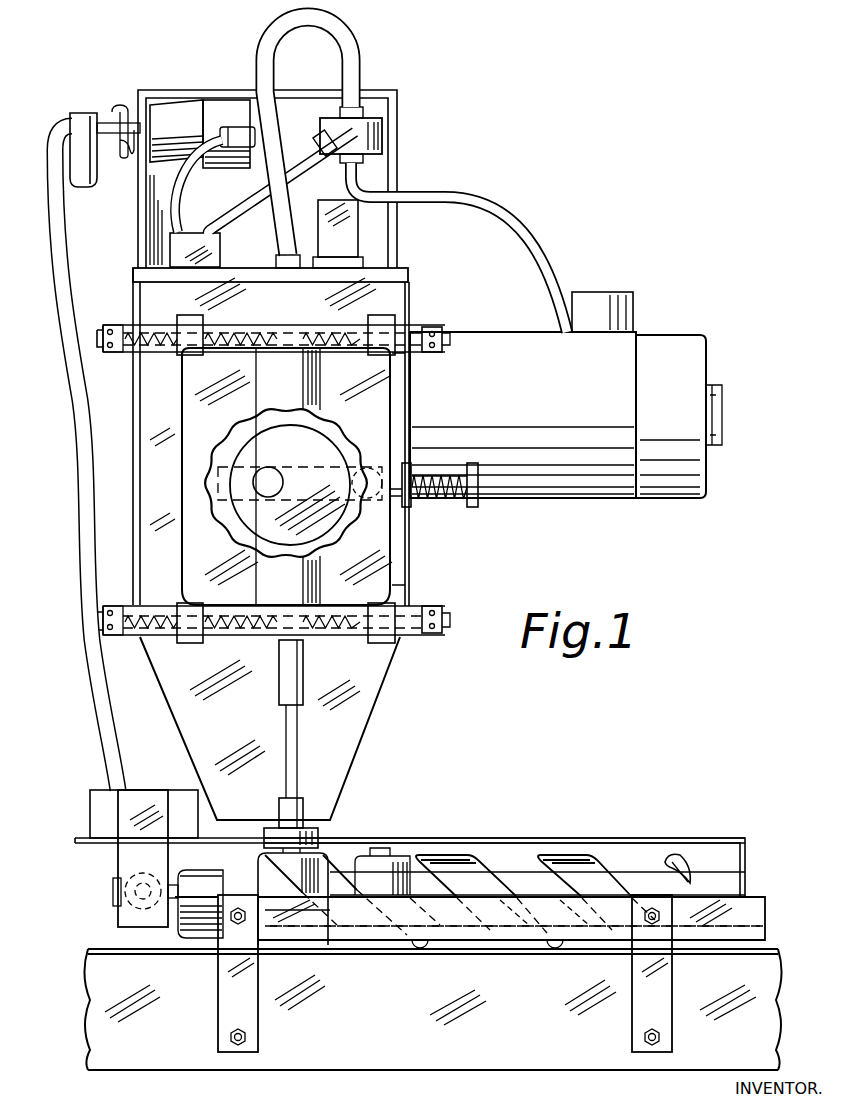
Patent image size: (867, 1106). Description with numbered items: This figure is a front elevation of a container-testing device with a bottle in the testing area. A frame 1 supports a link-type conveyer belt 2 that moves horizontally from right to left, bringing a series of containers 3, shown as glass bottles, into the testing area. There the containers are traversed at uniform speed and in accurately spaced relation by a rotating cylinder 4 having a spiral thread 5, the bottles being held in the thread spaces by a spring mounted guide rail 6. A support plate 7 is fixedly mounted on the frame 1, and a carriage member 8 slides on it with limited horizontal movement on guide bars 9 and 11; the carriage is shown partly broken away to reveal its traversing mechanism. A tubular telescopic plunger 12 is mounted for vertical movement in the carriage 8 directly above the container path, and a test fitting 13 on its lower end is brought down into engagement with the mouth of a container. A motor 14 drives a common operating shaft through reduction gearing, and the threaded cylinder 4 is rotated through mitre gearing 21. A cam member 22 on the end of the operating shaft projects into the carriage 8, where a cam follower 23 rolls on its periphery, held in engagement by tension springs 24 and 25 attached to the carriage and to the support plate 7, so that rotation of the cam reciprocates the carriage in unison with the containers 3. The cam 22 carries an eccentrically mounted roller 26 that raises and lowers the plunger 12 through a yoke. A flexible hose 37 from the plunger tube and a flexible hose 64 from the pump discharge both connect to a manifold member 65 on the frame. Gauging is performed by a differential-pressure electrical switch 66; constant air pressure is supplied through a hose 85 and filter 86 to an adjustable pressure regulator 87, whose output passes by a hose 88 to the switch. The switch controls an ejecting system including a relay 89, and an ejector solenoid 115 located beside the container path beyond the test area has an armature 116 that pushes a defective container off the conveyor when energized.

The frame 1 is at (366, 1080).
The link-type conveyer belt 2 is at (422, 950).
The containers 3 is at (385, 858).
The rotating cylinder 4 is at (634, 878).
The spiral thread 5 is at (582, 858).
The spring mounted guide rail 6 is at (572, 905).
The support plate 7 is at (362, 689).
The carriage member 8 is at (368, 550).
The guide bar 9 is at (412, 620).
The guide bar 11 is at (415, 332).
The tubular telescopic plunger 12 is at (292, 672).
The test fitting 13 is at (320, 840).
The motor 14 is at (622, 496).
The mitre gearing 21 is at (125, 910).
The cam member 22 is at (262, 448).
The cam follower 23 is at (365, 488).
The tension spring 24 is at (160, 340).
The tension spring 25 is at (165, 626).
The eccentrically mounted roller 26 is at (265, 486).
The flexible hose 37 is at (348, 55).
The flexible hose 64 is at (527, 248).
The manifold member 65 is at (378, 133).
The differential-pressure electrical switch 66 is at (175, 249).
The hose 85 is at (82, 463).
The filter 86 is at (83, 128).
The adjustable pressure regulator 87 is at (183, 125).
The hose 88 is at (250, 190).
The relay 89 is at (345, 238).
The ejector solenoid 115 is at (128, 797).
The armature 116 is at (142, 800).